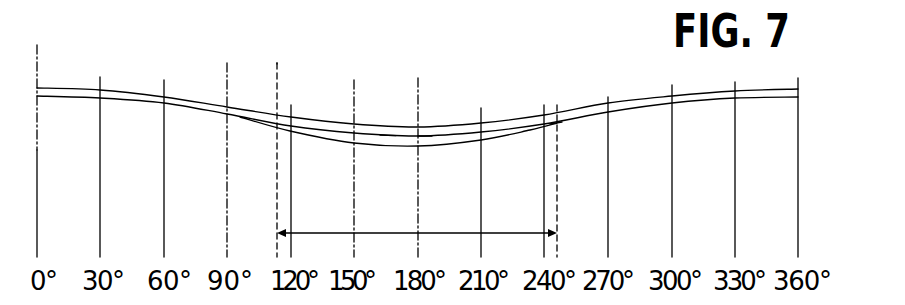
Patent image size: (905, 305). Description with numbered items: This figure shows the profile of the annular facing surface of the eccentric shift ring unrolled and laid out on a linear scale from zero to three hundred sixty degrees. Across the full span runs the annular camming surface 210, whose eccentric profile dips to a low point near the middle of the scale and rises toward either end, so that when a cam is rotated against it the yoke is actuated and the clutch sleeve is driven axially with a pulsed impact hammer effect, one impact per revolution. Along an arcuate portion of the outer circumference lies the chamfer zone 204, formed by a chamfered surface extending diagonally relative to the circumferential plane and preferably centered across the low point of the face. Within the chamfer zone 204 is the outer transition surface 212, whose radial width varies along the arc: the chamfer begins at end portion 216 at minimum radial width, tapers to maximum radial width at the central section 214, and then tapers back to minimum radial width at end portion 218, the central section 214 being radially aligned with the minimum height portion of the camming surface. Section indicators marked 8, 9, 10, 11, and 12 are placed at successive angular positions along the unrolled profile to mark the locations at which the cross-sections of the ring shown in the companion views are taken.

The section line of FIG. 8 is at (227, 152).
The section line of FIG. 9 is at (277, 158).
The section line of FIG. 10 is at (354, 172).
The section line of FIG. 11 is at (409, 172).
The section line of FIG. 12 is at (37, 129).
The chamfer zone 204 is at (490, 136).
The annular camming surface 210 is at (570, 115).
The outer transition surface 212 is at (388, 140).
The central section 214 is at (423, 141).
The end portion 216 is at (277, 127).
The end portion 218 is at (558, 126).